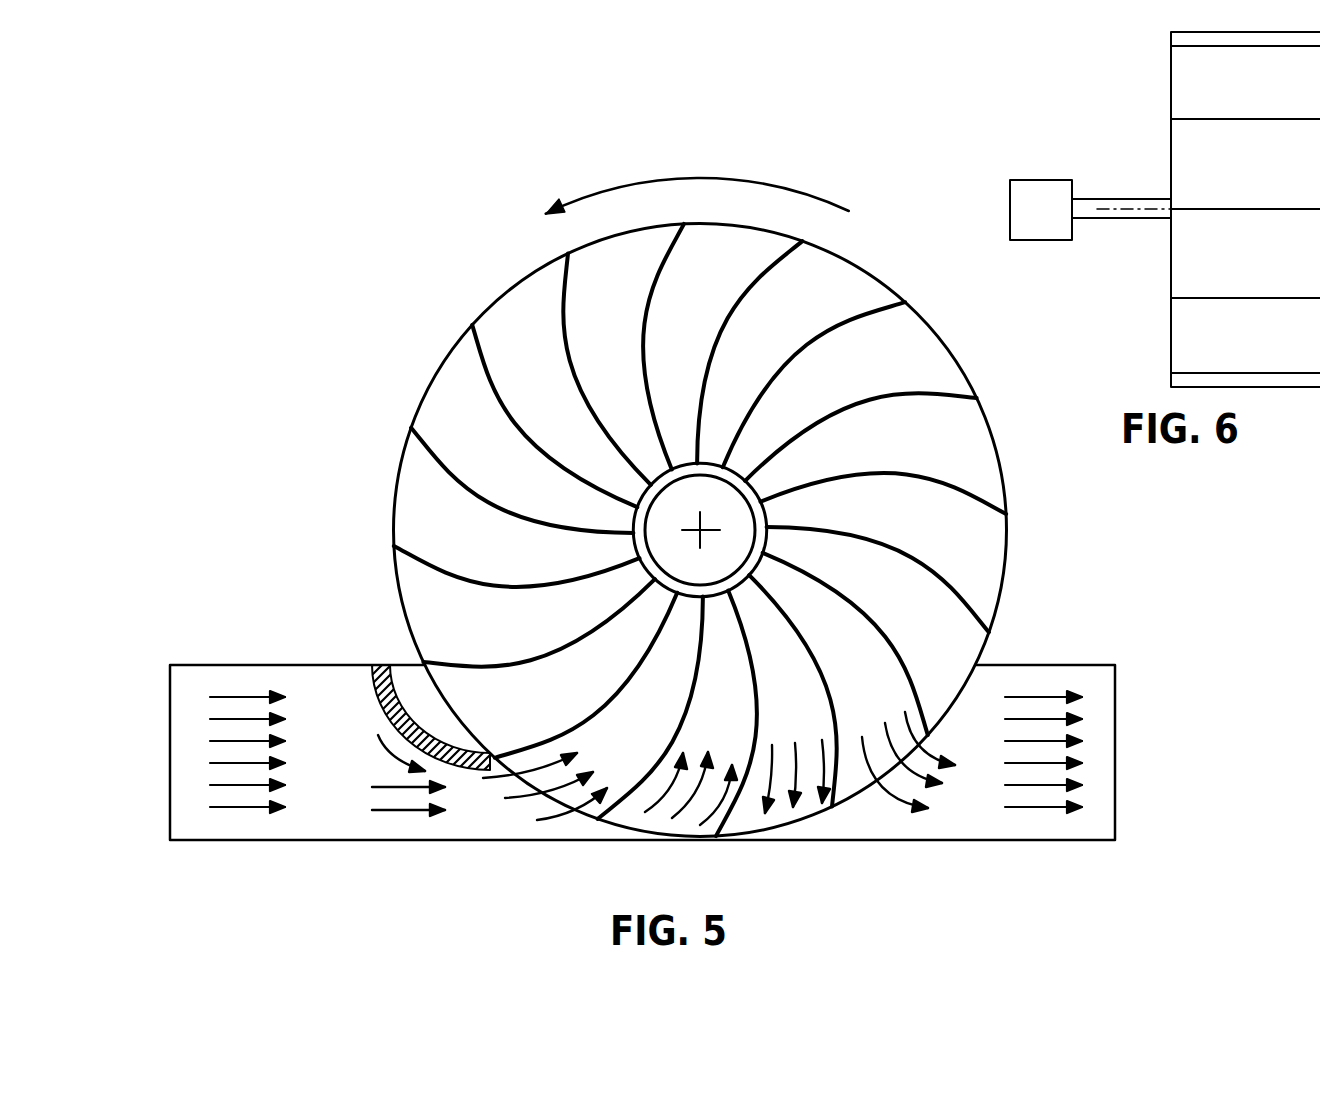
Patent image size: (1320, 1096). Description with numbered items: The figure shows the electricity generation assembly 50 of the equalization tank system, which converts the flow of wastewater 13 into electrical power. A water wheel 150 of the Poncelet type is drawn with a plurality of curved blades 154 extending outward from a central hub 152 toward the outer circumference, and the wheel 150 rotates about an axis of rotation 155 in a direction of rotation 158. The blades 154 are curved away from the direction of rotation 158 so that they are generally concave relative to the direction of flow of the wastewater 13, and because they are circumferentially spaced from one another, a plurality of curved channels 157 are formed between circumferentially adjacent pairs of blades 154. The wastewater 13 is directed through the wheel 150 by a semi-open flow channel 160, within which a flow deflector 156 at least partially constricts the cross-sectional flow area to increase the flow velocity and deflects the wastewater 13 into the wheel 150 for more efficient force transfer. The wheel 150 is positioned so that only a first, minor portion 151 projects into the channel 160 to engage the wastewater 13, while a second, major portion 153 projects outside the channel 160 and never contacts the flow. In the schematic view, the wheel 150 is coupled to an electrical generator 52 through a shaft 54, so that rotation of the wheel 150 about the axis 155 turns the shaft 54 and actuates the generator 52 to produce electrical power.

In FIG. 5, the electricity generation assembly 50 is at (488, 162).
In FIG. 5, the wastewater 13 is at (237, 697).
In FIG. 5, the water wheel 150 is at (452, 352).
In FIG. 6, the water wheel 150 is at (1171, 53).
In FIG. 5, the first portion 151 is at (847, 808).
In FIG. 5, the hub 152 is at (758, 492).
In FIG. 5, the second portion 153 is at (497, 285).
In FIG. 5, the curved blades 154 is at (416, 446).
In FIG. 5, the axis of rotation 155 is at (700, 530).
In FIG. 6, the axis of rotation 155 is at (1138, 218).
In FIG. 5, the flow deflector 156 is at (373, 690).
In FIG. 5, the curved channels 157 is at (427, 508).
In FIG. 5, the direction of rotation 158 is at (697, 164).
In FIG. 5, the flow channel 160 is at (288, 665).
In FIG. 6, the electrical generator 52 is at (1035, 180).
In FIG. 6, the shaft 54 is at (1110, 199).